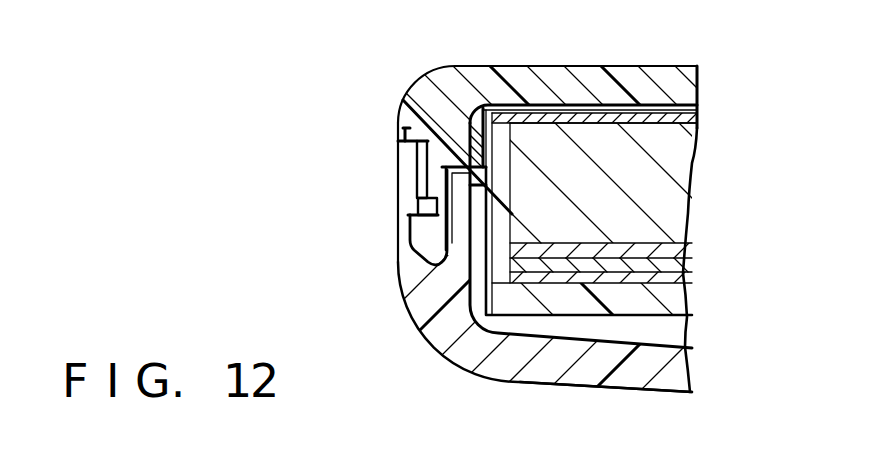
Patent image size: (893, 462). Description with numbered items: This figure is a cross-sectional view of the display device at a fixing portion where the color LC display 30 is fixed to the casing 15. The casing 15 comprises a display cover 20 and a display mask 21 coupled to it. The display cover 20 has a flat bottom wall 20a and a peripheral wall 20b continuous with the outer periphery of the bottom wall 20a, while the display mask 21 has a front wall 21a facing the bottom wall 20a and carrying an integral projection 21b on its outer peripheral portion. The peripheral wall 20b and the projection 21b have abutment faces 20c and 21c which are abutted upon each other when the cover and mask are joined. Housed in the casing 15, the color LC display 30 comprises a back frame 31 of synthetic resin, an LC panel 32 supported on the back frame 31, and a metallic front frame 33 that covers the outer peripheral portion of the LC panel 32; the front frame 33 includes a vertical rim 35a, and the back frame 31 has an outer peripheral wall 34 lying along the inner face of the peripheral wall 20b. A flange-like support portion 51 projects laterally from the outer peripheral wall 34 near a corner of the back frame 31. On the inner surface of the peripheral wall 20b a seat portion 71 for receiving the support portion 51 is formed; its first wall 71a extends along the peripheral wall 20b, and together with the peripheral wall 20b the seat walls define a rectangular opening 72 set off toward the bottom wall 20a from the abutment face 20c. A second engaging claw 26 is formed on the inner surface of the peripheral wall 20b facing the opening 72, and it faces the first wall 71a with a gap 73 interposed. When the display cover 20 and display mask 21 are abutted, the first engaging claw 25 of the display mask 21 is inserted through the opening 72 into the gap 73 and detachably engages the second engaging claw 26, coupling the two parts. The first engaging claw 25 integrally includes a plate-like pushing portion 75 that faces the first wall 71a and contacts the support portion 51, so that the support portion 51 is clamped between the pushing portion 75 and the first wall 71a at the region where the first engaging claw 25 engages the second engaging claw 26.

The casing 15 is at (440, 360).
The display cover 20 is at (423, 338).
The bottom wall 20a is at (678, 378).
The peripheral wall 20b is at (403, 178).
The abutment face 20c is at (399, 130).
The display mask 21 is at (667, 66).
The front wall 21a is at (698, 67).
The projection 21b is at (420, 133).
The abutment face 21c is at (401, 128).
The first engaging claw 25 is at (410, 233).
The second engaging claw 26 is at (416, 203).
The color LC display 30 is at (683, 163).
The back frame 31 is at (675, 300).
The LC panel 32 is at (673, 212).
The front frame 33 is at (660, 115).
The outer peripheral wall 34 is at (460, 252).
The vertical rim 35a is at (593, 118).
The support portion 51 is at (401, 131).
The seat portion 71 is at (444, 242).
The first wall 71a is at (488, 205).
The opening 72 is at (447, 173).
The gap 73 is at (428, 216).
The pushing portion 75 is at (458, 148).